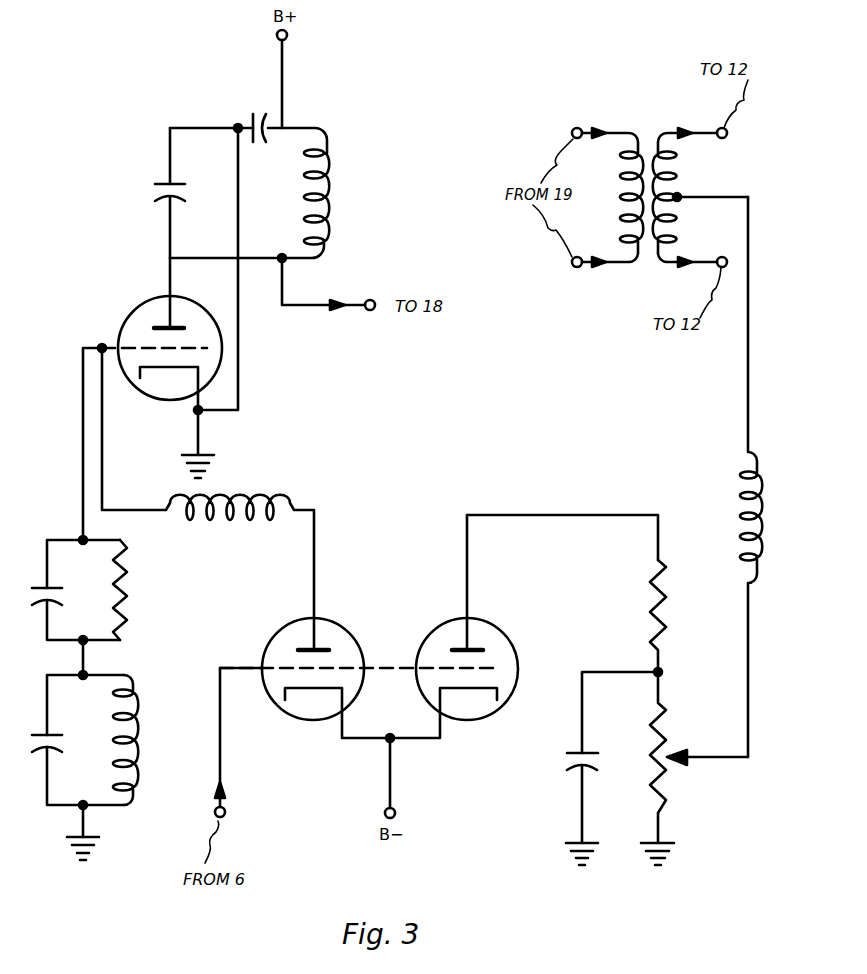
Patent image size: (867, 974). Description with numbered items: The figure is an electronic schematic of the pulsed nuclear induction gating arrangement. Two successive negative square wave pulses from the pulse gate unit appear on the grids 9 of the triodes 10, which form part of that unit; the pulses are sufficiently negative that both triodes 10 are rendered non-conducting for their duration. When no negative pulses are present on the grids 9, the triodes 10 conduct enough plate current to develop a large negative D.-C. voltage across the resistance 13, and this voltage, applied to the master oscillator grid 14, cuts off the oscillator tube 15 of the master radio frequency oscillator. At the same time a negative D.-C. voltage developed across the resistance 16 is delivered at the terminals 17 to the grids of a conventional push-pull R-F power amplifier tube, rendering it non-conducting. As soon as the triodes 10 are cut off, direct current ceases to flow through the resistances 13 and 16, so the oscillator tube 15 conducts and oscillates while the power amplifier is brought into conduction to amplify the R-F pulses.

The grids 9 is at (292, 667).
The triodes 10 is at (294, 714).
The resistance 13 is at (131, 582).
The master oscillator grid 14 is at (140, 347).
The oscillator tube 15 is at (134, 310).
The resistance 16 is at (667, 782).
The terminals 17 is at (718, 128).